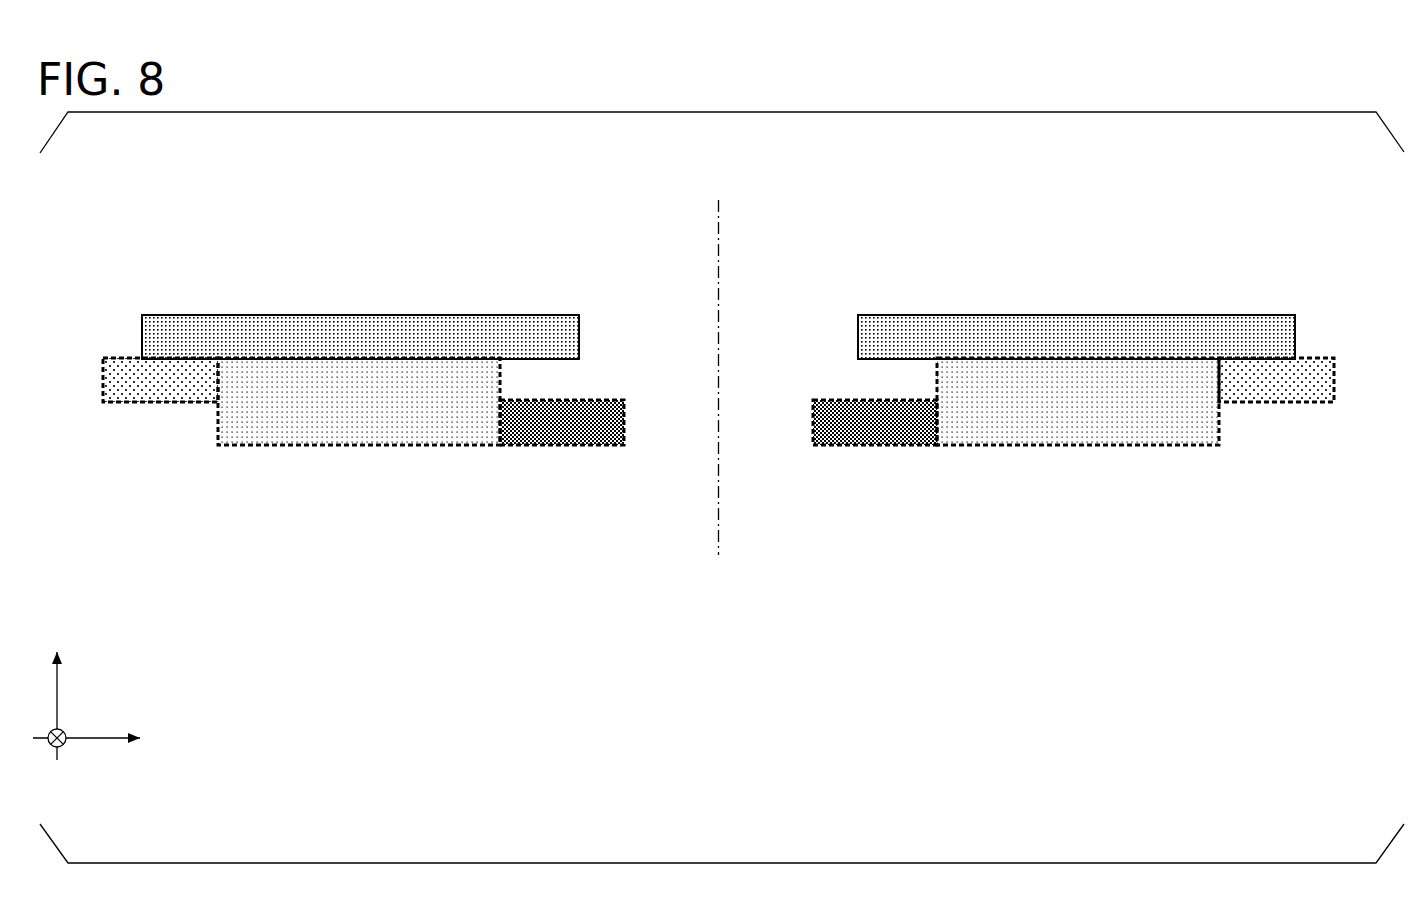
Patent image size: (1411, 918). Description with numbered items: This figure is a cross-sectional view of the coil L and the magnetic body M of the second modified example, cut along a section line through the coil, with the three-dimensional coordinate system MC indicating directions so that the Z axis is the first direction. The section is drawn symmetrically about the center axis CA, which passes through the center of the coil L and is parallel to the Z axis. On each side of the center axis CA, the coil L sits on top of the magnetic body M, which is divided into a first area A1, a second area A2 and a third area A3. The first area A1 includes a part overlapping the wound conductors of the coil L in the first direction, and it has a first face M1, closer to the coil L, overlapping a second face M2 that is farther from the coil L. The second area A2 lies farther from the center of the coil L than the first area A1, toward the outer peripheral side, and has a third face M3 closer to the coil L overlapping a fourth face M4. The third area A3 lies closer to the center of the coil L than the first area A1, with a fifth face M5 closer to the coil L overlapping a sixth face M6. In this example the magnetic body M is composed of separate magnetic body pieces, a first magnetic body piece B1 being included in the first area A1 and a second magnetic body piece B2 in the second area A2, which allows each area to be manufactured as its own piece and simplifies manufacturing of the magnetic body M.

The coil L is at (352, 315).
The first area A1 is at (240, 446).
The second area A2 is at (103, 372).
The third area A3 is at (583, 400).
The first magnetic body piece B1 is at (330, 425).
The second magnetic body piece B2 is at (128, 383).
The magnetic body M is at (358, 460).
The first face M1 is at (445, 357).
The second face M2 is at (440, 445).
The third face M3 is at (121, 356).
The fourth face M4 is at (160, 403).
The fifth face M5 is at (617, 400).
The sixth face M6 is at (562, 447).
The center axis CA is at (720, 218).
The three-dimensional coordinate system MC is at (78, 718).